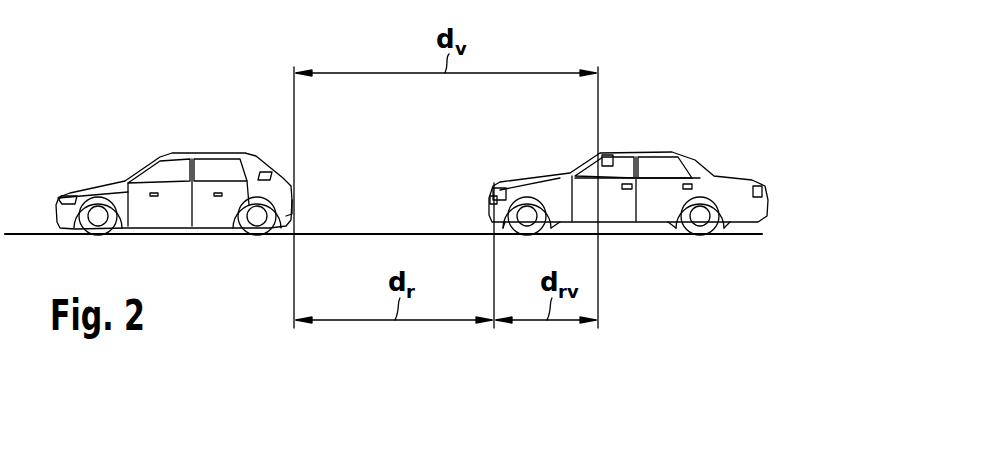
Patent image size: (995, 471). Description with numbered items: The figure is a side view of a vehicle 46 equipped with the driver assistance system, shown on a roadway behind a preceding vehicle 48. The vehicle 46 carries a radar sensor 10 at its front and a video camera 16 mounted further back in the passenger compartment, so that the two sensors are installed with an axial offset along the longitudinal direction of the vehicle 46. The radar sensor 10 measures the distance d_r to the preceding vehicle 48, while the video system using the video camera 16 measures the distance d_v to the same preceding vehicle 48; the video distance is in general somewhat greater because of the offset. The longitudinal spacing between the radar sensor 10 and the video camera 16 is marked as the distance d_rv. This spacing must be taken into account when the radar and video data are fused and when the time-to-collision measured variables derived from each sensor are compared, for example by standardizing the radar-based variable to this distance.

The preceding vehicle 48 is at (173, 166).
The vehicle 46 is at (703, 166).
The video camera 16 is at (606, 155).
The radar sensor 10 is at (503, 185).